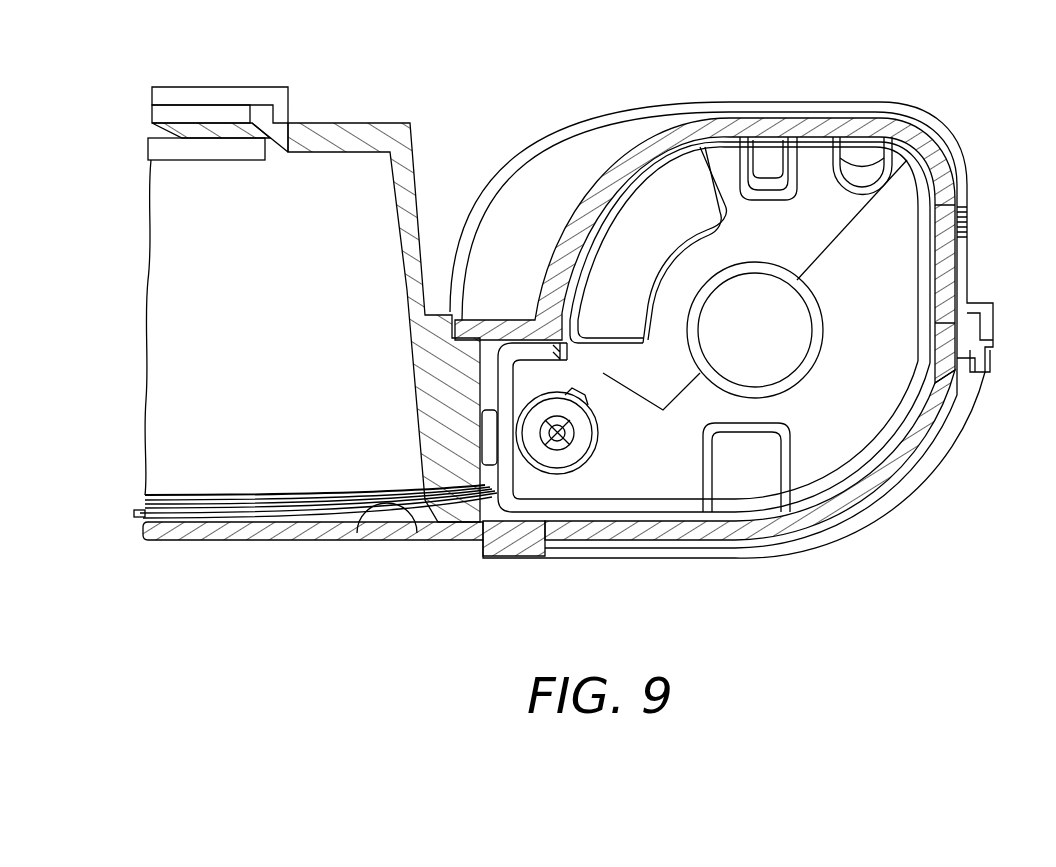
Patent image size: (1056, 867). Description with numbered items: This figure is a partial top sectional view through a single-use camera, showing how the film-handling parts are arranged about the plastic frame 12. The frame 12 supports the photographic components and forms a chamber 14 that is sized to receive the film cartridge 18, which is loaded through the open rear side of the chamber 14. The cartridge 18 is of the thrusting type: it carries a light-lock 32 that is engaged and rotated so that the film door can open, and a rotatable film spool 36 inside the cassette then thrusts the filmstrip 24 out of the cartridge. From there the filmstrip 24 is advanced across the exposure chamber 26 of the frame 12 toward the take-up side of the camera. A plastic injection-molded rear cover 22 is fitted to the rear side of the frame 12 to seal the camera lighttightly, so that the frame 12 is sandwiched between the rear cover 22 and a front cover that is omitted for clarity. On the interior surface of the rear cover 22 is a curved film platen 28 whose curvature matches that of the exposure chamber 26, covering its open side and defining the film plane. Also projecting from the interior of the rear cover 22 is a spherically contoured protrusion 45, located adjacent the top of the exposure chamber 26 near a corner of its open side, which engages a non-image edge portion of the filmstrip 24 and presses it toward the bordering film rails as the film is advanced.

The frame 12 is at (363, 123).
The chamber 14 is at (932, 403).
The film cartridge 18 is at (720, 170).
The rear cover 22 is at (755, 530).
The filmstrip 24 is at (500, 518).
The exposure chamber 26 is at (268, 463).
The curved film platen 28 is at (450, 527).
The light-lock 32 is at (577, 447).
The film spool 36 is at (780, 352).
The protrusion 45 is at (388, 525).